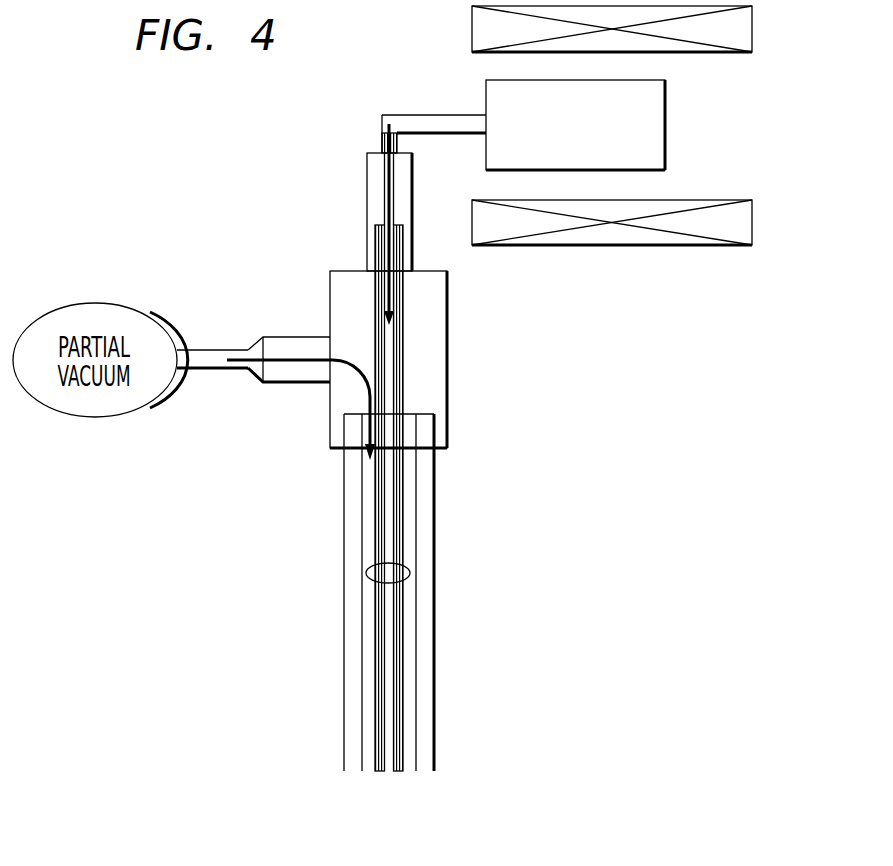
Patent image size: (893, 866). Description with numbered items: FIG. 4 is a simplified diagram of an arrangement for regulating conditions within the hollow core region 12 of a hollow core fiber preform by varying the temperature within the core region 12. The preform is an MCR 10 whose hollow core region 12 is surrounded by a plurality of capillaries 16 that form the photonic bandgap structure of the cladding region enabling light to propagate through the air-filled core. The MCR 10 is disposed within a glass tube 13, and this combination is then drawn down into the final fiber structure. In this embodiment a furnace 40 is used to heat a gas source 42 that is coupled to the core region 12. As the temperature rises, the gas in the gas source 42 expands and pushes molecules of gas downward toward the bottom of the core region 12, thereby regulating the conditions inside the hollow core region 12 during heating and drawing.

The MCR 10 is at (366, 573).
The hollow core region 12 is at (390, 371).
The glass tube 13 is at (425, 485).
The capillaries 16 is at (402, 620).
The furnace 40 is at (760, 6).
The gas source 42 is at (665, 123).